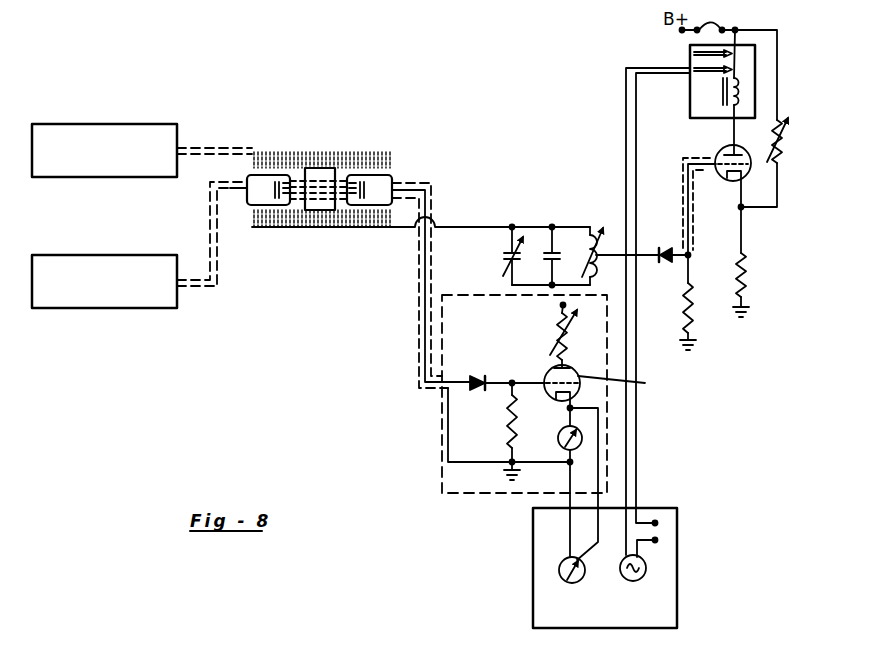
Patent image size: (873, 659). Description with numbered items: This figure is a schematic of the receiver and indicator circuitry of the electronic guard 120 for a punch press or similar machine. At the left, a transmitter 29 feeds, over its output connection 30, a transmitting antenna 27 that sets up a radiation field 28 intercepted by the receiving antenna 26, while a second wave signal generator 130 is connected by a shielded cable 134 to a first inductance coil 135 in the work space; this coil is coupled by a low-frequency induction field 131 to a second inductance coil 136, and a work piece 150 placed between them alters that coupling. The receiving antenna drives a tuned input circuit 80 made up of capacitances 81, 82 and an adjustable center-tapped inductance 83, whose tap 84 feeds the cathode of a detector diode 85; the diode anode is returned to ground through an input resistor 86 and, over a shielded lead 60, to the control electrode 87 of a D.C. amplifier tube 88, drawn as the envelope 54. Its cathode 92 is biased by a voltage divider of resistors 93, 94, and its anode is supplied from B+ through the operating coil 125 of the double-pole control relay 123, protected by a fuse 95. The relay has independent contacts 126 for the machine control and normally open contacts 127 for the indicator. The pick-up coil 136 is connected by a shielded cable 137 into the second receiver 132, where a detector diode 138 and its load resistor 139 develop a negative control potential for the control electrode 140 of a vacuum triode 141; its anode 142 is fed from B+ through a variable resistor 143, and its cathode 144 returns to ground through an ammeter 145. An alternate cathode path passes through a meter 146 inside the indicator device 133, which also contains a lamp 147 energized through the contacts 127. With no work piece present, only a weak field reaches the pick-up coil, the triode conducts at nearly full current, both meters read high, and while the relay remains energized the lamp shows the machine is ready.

The transmitter 29 is at (98, 130).
The second wave signal generator 130 is at (102, 262).
The transmitter output line 30 is at (198, 147).
The shielded cable 134 is at (198, 288).
The receiving antenna 26 is at (319, 197).
The transmitting antenna 27 is at (280, 152).
The radiation field 28 is at (297, 216).
The induction field 131 is at (342, 183).
The work piece 150 is at (320, 170).
The first inductance coil 135 is at (288, 204).
The second inductance coil 136 is at (349, 206).
The shielded cable 137 is at (422, 307).
The electronic guard 120 is at (467, 181).
The tuned input circuit 80 is at (555, 214).
The capacitance 81 is at (511, 256).
The capacitance 82 is at (548, 251).
The adjustable center-tapped inductance 83 is at (589, 245).
The inductance tap 84 is at (595, 257).
The detector diode 85 is at (667, 247).
The input resistor 86 is at (694, 312).
The shielded lead 60 is at (683, 191).
The electron tube 54 is at (728, 172).
The control electrode 87 is at (745, 168).
The D.C. amplifier tube 88 is at (722, 167).
The cathode 92 is at (735, 176).
The resistor 93 is at (775, 136).
The resistor 94 is at (748, 266).
The protective device 95 is at (707, 26).
The control relay 123 is at (709, 64).
The operating coil 125 is at (738, 80).
The contacts 126 is at (693, 53).
The contacts 127 is at (712, 70).
The second receiver 132 is at (442, 449).
The detector diode 138 is at (474, 378).
The resistor 139 is at (508, 419).
The control electrode 140 is at (553, 381).
The electric discharge device 141 is at (628, 384).
The anode 142 is at (567, 374).
The variable resistor 143 is at (556, 332).
The cathode 144 is at (563, 397).
The ammeter 145 is at (562, 444).
The indicator device 133 is at (599, 545).
The meter 146 is at (558, 570).
The lamp 147 is at (646, 575).